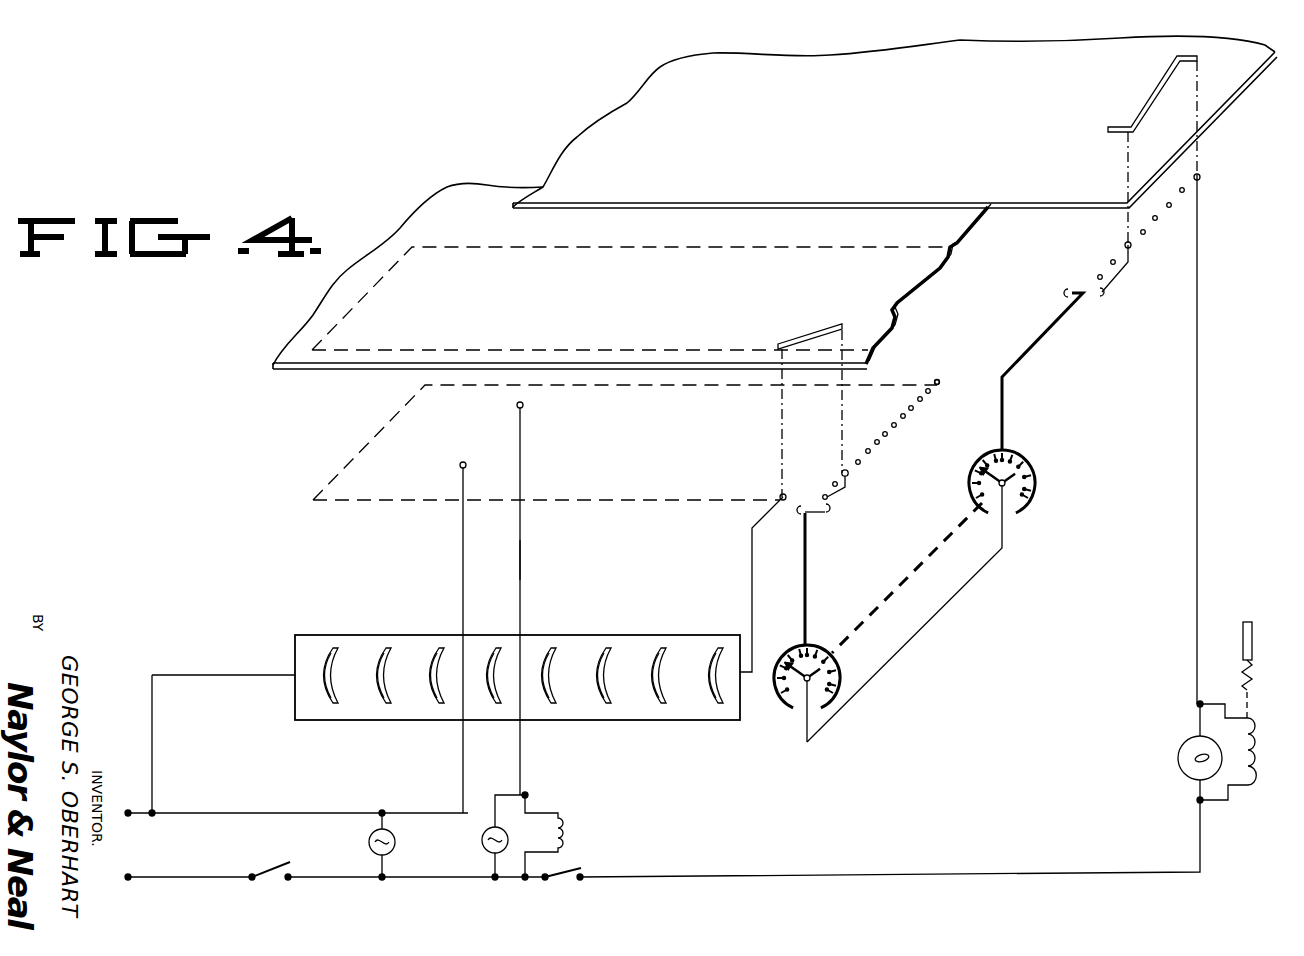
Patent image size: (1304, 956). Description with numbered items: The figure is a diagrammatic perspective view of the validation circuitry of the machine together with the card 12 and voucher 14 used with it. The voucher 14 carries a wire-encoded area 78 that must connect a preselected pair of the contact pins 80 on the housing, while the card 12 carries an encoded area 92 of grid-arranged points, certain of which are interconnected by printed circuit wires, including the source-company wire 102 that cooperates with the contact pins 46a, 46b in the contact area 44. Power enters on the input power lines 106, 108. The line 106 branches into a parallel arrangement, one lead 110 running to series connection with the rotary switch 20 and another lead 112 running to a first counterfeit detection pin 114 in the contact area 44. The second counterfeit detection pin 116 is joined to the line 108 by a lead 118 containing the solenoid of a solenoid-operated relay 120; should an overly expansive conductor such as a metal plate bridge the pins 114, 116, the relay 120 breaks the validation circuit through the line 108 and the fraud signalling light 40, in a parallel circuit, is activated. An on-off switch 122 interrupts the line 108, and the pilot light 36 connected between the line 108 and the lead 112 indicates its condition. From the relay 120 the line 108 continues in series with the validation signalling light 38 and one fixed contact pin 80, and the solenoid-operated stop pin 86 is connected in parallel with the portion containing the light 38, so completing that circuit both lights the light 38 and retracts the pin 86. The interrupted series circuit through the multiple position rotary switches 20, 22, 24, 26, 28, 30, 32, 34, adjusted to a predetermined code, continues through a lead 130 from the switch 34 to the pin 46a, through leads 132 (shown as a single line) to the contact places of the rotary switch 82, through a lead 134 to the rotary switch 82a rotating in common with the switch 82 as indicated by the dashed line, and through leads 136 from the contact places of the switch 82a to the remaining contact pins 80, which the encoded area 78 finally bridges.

The card 12 is at (300, 320).
The voucher 14 is at (582, 125).
The rotary switch 20 is at (331, 703).
The rotary switch 22 is at (384, 703).
The rotary switch 24 is at (437, 703).
The rotary switch 26 is at (494, 703).
The rotary switch 28 is at (549, 703).
The rotary switch 30 is at (604, 703).
The rotary switch 32 is at (659, 703).
The rotary switch 34 is at (716, 703).
The pilot light 36 is at (395, 843).
The validation signalling light 38 is at (1190, 782).
The fraud signalling light 40 is at (483, 836).
The contact area 44 is at (378, 442).
The contact pin 46a is at (778, 497).
The contact pin 46b is at (828, 498).
The wire-encoded area 78 is at (1140, 93).
The contact pins 80 is at (1201, 178).
The rotary switch 82 is at (800, 700).
The rotary switch 82a is at (1014, 506).
The solenoid-operated stop pin 86 is at (1240, 635).
The encoded area 92 is at (395, 278).
The printed circuit wire 102 is at (821, 336).
The input power line 106 is at (136, 816).
The input power line 108 is at (150, 880).
The lead 110 is at (158, 737).
The lead 112 is at (247, 813).
The counterfeit detection pin 114 is at (460, 466).
The counterfeit detection pin 116 is at (517, 406).
The lead 118 is at (522, 557).
The solenoid-operated relay 120 is at (575, 879).
The on-off switch 122 is at (270, 880).
The lead 130 is at (752, 572).
The leads 132 is at (810, 572).
The lead 134 is at (905, 648).
The leads 136 is at (1004, 408).